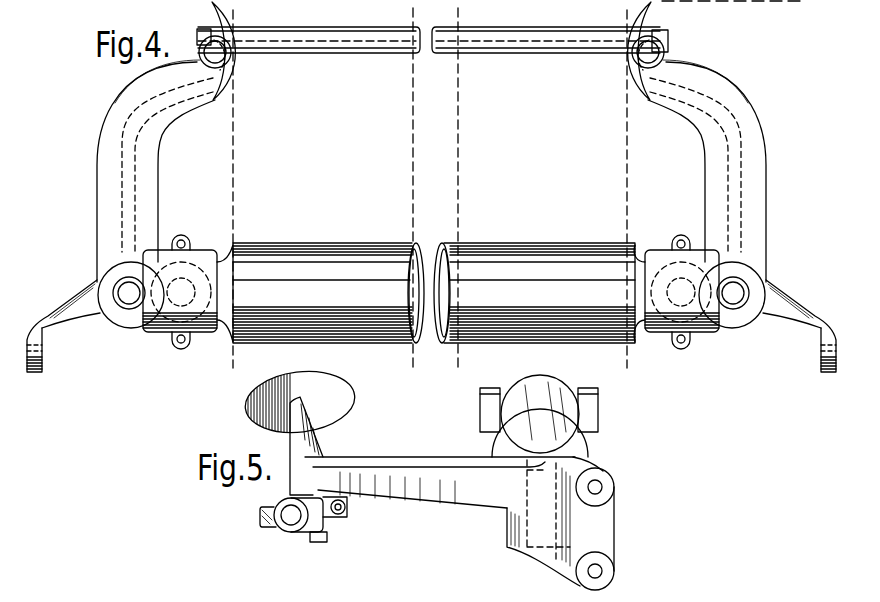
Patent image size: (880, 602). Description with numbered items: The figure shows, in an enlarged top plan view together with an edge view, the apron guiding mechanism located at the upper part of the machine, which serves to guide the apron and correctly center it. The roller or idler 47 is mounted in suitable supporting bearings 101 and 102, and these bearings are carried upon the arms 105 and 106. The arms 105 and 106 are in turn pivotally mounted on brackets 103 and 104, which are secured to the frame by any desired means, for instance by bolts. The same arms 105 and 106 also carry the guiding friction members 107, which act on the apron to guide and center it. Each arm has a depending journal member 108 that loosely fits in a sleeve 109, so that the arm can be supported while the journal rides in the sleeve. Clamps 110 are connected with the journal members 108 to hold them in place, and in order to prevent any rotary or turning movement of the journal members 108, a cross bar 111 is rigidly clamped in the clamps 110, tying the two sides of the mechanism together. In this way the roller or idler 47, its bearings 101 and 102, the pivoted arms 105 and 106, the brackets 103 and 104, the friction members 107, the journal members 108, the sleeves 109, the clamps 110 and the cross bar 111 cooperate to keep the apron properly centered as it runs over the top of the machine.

In FIG. 4, the roller or idler 47 is at (527, 256).
In FIG. 4, the supporting bearing 101 is at (190, 287).
In FIG. 4, the supporting bearing 102 is at (652, 262).
In FIG. 4, the bracket 103 is at (80, 305).
In FIG. 5, the bracket 103 is at (607, 515).
In FIG. 4, the bracket 104 is at (785, 308).
In FIG. 4, the arm 105 is at (147, 190).
In FIG. 5, the arm 105 is at (407, 458).
In FIG. 4, the arm 106 is at (756, 191).
In FIG. 4, the guiding friction member 107 is at (233, 71).
In FIG. 5, the journal member 108 is at (323, 537).
In FIG. 5, the sleeve 109 is at (330, 447).
In FIG. 5, the clamp 110 is at (312, 520).
In FIG. 4, the cross bar 111 is at (358, 52).
In FIG. 5, the cross bar 111 is at (286, 533).